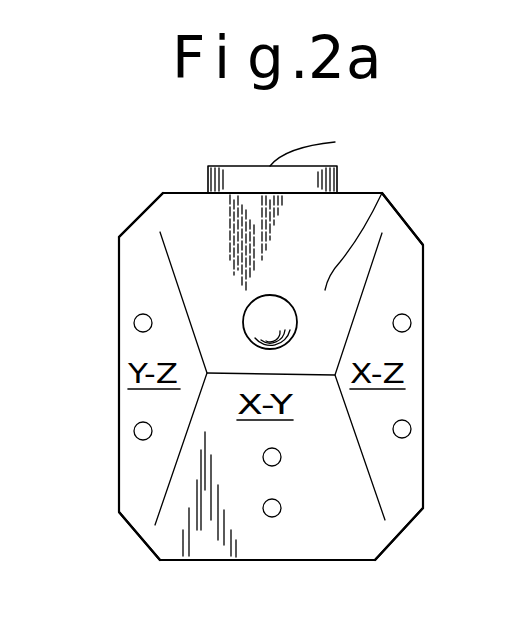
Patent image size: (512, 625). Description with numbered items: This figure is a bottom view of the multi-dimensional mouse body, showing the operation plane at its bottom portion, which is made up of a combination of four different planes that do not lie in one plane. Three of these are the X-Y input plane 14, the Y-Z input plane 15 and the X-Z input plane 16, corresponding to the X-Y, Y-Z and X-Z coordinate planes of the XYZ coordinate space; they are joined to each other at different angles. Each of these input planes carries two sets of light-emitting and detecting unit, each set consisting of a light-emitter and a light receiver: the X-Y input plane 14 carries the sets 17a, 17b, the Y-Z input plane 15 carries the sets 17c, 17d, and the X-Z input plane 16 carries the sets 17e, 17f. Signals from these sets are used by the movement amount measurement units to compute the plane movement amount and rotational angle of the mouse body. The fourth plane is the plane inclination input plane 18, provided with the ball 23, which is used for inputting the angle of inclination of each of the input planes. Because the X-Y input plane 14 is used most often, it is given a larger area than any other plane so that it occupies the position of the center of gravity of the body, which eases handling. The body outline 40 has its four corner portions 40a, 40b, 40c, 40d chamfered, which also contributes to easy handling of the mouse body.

The X-Y input plane 14 is at (206, 540).
The Y-Z input plane 15 is at (151, 272).
The X-Z input plane 16 is at (395, 478).
The plane inclination input plane 18 is at (382, 193).
The ball 23 is at (245, 320).
The light-emitting and detecting unit 17a is at (270, 517).
The light-emitting and detecting unit 17b is at (281, 460).
The light-emitting and detecting unit 17c is at (134, 430).
The light-emitting and detecting unit 17d is at (134, 320).
The light-emitting and detecting unit 17e is at (411, 319).
The light-emitting and detecting unit 17f is at (411, 425).
The housing body 40 is at (315, 377).
The chamfered corner portion 40a is at (422, 241).
The chamfered corner portion 40b is at (125, 233).
The chamfered corner portion 40c is at (141, 540).
The chamfered corner portion 40d is at (397, 540).